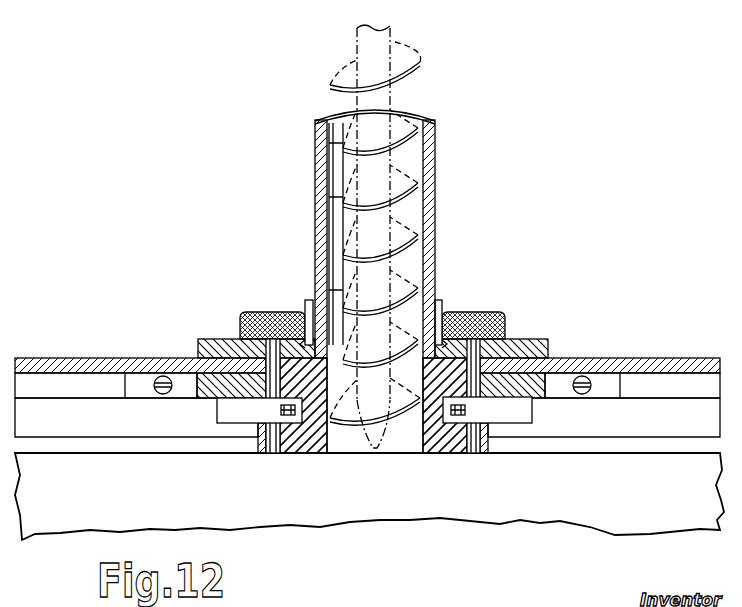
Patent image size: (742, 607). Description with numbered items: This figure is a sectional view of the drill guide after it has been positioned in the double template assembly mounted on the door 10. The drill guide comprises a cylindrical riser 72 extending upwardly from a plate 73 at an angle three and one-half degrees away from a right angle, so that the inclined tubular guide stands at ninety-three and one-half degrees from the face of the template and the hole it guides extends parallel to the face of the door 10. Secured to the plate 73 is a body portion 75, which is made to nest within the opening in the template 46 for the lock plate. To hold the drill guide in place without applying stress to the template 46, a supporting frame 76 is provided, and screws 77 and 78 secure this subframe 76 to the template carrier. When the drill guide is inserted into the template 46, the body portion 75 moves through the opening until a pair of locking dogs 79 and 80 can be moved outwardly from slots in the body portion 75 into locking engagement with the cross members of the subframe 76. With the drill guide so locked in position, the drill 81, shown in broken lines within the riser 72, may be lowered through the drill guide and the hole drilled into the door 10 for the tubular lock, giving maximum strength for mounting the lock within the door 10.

The door 10 is at (347, 520).
The template 46 is at (148, 358).
The cylindrical riser 72 is at (436, 190).
The plate 73 is at (530, 340).
The body portion 75 is at (310, 452).
The supporting frame 76 is at (204, 396).
The screw 77 is at (160, 394).
The screw 78 is at (588, 396).
The locking dog 79 is at (232, 420).
The locking dog 80 is at (507, 425).
The drill 81 is at (338, 78).